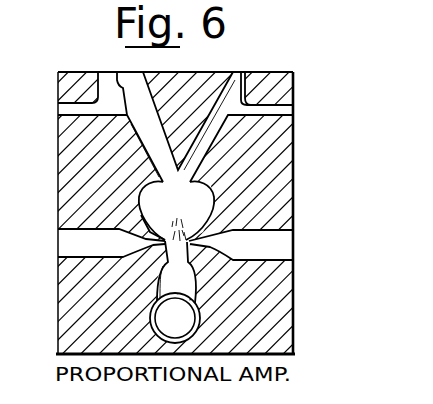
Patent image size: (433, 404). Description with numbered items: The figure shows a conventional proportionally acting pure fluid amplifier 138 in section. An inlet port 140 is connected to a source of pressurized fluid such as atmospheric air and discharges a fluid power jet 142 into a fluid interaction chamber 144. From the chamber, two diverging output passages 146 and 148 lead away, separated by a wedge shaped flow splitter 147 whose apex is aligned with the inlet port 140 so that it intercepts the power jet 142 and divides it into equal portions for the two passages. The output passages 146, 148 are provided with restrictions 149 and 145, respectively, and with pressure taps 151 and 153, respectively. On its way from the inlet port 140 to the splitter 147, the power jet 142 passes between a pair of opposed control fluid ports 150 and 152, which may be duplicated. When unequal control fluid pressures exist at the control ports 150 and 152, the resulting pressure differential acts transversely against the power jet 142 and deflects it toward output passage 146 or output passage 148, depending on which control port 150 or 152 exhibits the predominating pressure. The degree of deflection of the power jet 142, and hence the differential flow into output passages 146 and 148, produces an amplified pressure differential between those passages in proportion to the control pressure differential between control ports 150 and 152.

The proportionally acting pure fluid amplifier 138 is at (293, 156).
The inlet port 140 is at (185, 329).
The fluid power jet 142 is at (150, 232).
The fluid interaction chamber 144 is at (190, 215).
The restriction 145 is at (241, 72).
The output passage 146 is at (103, 74).
The wedge shaped flow splitter 147 is at (183, 99).
The output passage 148 is at (251, 78).
The restriction 149 is at (115, 74).
The control fluid port 150 is at (137, 239).
The pressure tap 151 is at (72, 110).
The control fluid port 152 is at (215, 242).
The pressure tap 153 is at (293, 108).